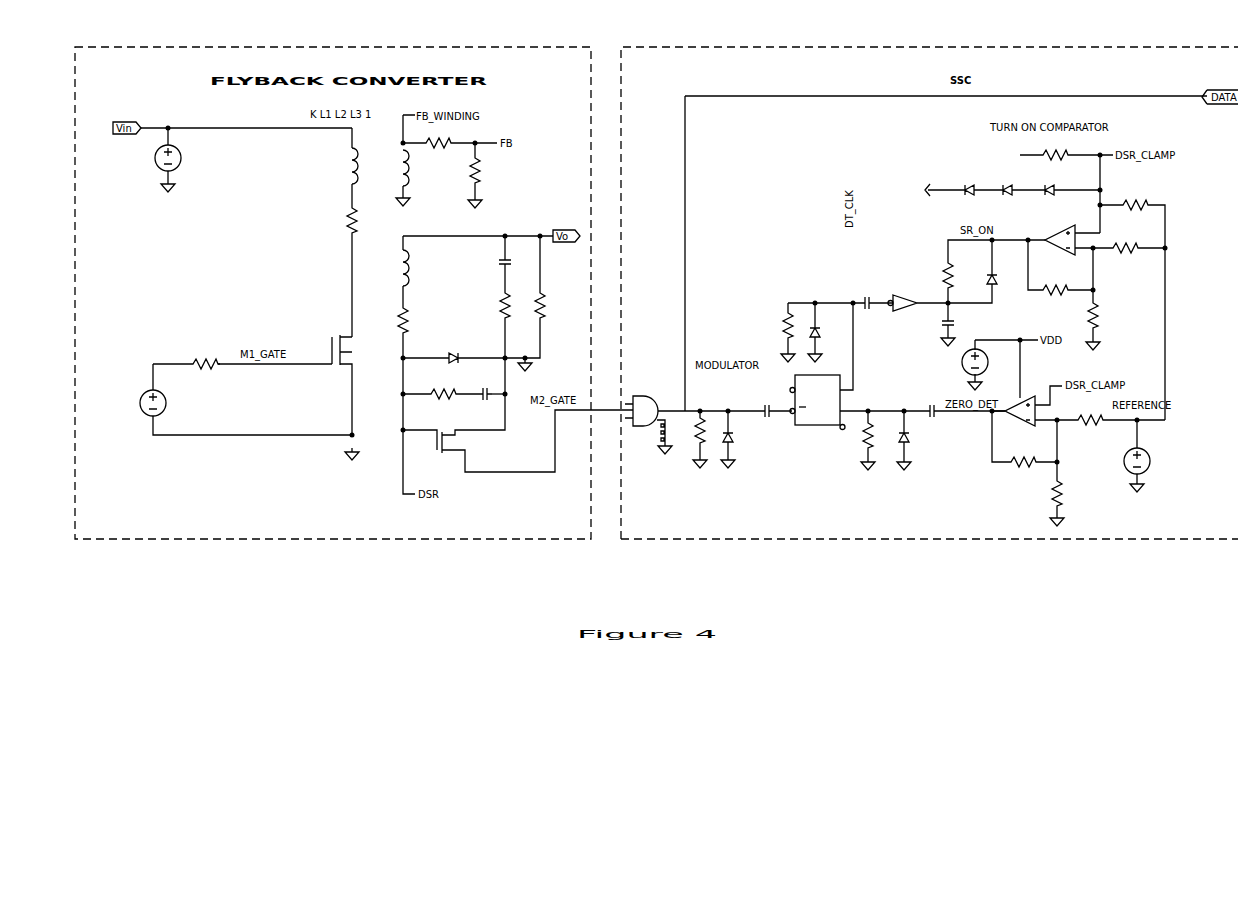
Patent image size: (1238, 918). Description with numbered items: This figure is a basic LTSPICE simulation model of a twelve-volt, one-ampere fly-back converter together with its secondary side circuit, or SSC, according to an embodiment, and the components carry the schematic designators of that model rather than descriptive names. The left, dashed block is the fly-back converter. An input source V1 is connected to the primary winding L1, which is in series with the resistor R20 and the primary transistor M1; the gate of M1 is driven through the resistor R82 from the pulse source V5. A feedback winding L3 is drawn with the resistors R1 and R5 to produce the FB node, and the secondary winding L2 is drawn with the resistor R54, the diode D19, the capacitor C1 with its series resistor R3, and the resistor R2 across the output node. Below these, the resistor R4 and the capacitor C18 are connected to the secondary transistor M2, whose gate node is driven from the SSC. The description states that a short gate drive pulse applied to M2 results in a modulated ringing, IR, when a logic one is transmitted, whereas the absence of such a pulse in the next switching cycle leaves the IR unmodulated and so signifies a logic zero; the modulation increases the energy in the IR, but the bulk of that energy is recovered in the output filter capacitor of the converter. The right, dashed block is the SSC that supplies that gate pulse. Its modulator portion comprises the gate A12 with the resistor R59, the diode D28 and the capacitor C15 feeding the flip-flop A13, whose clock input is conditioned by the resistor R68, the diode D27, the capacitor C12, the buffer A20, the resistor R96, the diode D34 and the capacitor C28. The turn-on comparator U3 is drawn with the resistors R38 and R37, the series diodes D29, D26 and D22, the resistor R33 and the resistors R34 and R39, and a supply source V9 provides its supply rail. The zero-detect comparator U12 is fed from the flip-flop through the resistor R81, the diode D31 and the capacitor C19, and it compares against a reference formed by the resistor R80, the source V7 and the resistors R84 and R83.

The input voltage source 325V V1 is at (157, 162).
The primary winding inductor L1 is at (330, 166).
The primary sense resistor R20 is at (363, 271).
The primary switch MOSFET STP9NM60 M1 is at (325, 385).
The gate resistor R82 is at (186, 363).
The gate drive source V5 is at (249, 412).
The feedback resistor R1 is at (450, 143).
The feedback winding inductor L3 is at (421, 178).
The feedback divider resistor R5 is at (484, 175).
The secondary winding inductor L2 is at (423, 270).
The secondary sense resistor R54 is at (416, 399).
The output capacitor C1 is at (469, 263).
The output capacitor ESR R3 is at (488, 325).
The load resistor R2 is at (535, 303).
The output rectifier diode D19 is at (454, 344).
The snubber resistor R4 is at (440, 393).
The snubber capacitor C18 is at (488, 395).
The modulating switch M2 is at (518, 415).
The modulator AND gate A12 is at (657, 422).
The modulator resistor R59 is at (689, 439).
The modulator clamp diode D28 is at (755, 439).
The modulator coupling capacitor C15 is at (766, 410).
The SR flip-flop A13 is at (829, 366).
The clock pull-down resistor R68 is at (777, 332).
The clock clamp diode D27 is at (842, 332).
The delay capacitor C12 is at (872, 301).
The buffer A20 is at (918, 296).
The delay resistor R96 is at (967, 271).
The Schottky diode BAT54 D34 is at (988, 271).
The timing capacitor C28 is at (958, 324).
The comparator feedback resistor R38 is at (1062, 274).
The comparator bias resistor R37 is at (1103, 320).
The level shift diode D29 is at (967, 187).
The level shift diode D26 is at (1007, 187).
The level shift diode D22 is at (1051, 187).
The DSR clamp resistor R33 is at (1054, 154).
The turn-on comparator LT1720 U3 is at (1065, 242).
The comparator input resistor R34 is at (1132, 302).
The comparator hysteresis resistor R39 is at (1129, 259).
The VDD supply 3V V9 is at (1000, 364).
The zero-detect comparator LT1720 U12 is at (1027, 391).
The reference resistor R80 is at (1111, 418).
The reference voltage source 2.36V V7 is at (1125, 455).
The hysteresis resistor R84 is at (1025, 445).
The reference divider resistor R83 is at (1067, 494).
The reset pull-down resistor R81 is at (859, 440).
The reset clamp diode D31 is at (931, 440).
The zero-detect coupling capacitor C19 is at (936, 409).